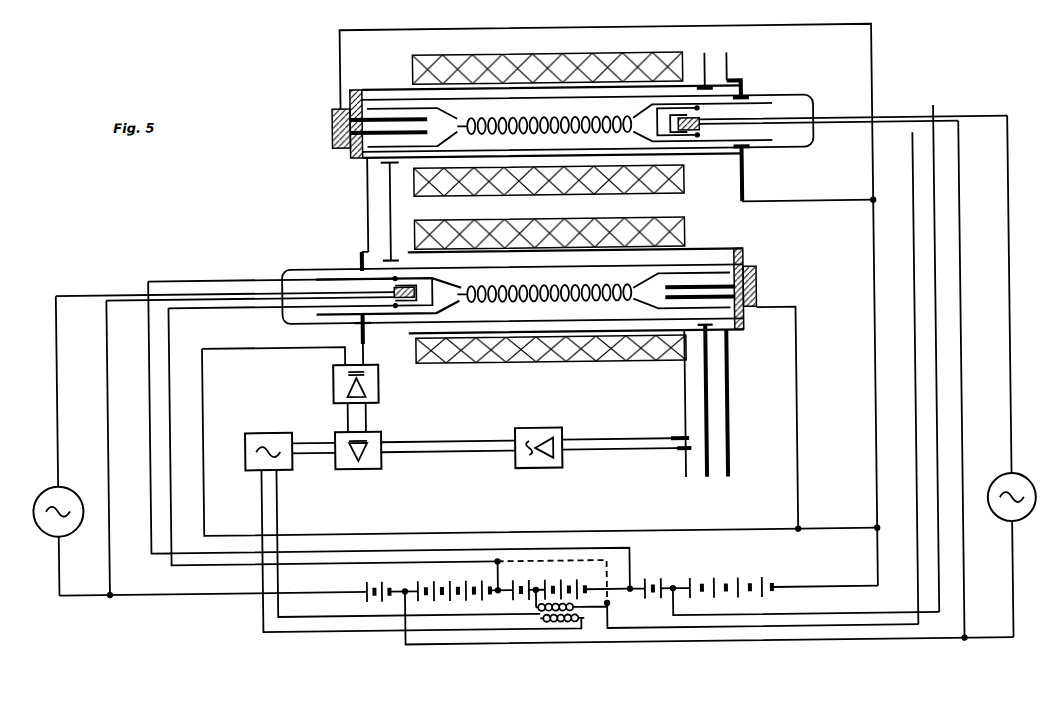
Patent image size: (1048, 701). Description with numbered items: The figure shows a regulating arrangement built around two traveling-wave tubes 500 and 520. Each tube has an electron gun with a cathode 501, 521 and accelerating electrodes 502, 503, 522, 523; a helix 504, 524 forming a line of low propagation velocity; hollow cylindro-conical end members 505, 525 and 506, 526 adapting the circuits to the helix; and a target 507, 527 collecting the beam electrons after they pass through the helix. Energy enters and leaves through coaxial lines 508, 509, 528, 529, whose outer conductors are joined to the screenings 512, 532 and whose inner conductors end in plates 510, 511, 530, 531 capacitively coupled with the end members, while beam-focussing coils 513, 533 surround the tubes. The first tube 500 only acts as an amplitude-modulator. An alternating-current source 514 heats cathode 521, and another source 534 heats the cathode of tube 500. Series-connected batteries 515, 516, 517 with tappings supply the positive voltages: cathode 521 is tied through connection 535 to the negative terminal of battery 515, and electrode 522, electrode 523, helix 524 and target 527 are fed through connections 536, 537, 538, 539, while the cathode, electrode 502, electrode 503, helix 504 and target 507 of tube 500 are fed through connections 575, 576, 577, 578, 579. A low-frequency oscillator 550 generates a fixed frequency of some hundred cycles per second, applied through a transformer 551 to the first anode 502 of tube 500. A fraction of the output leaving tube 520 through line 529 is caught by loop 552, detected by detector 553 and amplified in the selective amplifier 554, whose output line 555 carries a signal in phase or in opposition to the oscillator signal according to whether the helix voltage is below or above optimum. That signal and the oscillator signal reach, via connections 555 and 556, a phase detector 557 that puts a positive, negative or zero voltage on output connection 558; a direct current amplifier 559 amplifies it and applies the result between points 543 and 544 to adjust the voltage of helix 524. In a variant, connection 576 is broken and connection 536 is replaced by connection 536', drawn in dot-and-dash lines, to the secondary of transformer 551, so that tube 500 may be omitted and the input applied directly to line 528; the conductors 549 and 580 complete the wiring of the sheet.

The traveling-wave tube 500 is at (570, 99).
The cathode 501 is at (702, 121).
The first accelerating electrode 502 is at (655, 141).
The second accelerating electrode 503 is at (646, 110).
The helix 504 is at (566, 133).
The cylindro-conical end member 505 is at (740, 152).
The cylindro-conical end member 506 is at (452, 144).
The target 507 is at (334, 128).
The coaxial input line 508 is at (710, 56).
The coaxial output line 509 is at (368, 208).
The plate 510 is at (730, 83).
The plate 511 is at (368, 178).
The screening 512 is at (686, 178).
The beam-focussing coil 513 is at (570, 58).
The source of alternating current 514 is at (44, 527).
The battery 515 is at (366, 582).
The battery 516 is at (530, 580).
The battery 517 is at (726, 580).
The traveling-wave tube 520 is at (600, 271).
The cathode 521 is at (393, 291).
The first accelerating electrode 522 is at (450, 302).
The second accelerating electrode 523 is at (449, 275).
The helix 524 is at (560, 304).
The cylindro-conical end member 525 is at (392, 328).
The cylindro-conical end member 526 is at (691, 274).
The target 527 is at (758, 292).
The coaxial input line 528 is at (368, 244).
The coaxial output line 529 is at (730, 444).
The plate 530 is at (402, 259).
The plate 531 is at (727, 336).
The screening 532 is at (690, 251).
The beam-focussing coil 533 is at (594, 228).
The source of alternating current 534 is at (996, 486).
The connection 535 is at (210, 590).
The connection 536 is at (465, 582).
The connection 536' is at (571, 580).
The connection 537 is at (628, 584).
The connection 538 is at (582, 532).
The connection 539 is at (792, 400).
The point 543 is at (362, 340).
The point 544 is at (794, 531).
The conductors 549 is at (389, 434).
The low-frequency oscillator 550 is at (264, 432).
The transformer 551 is at (530, 610).
The loop 552 is at (686, 472).
The detector 553 is at (670, 436).
The amplifier 554 is at (539, 428).
The output line 555 is at (448, 446).
The connection 556 is at (318, 440).
The phase detector device 557 is at (345, 468).
The output connection 558 is at (365, 413).
The direct current amplifier 559 is at (333, 383).
The connection 575 is at (402, 641).
The connection 576 is at (622, 626).
The connection 577 is at (840, 617).
The connection 578 is at (842, 204).
The connection 579 is at (874, 186).
The conductors 580 is at (938, 372).